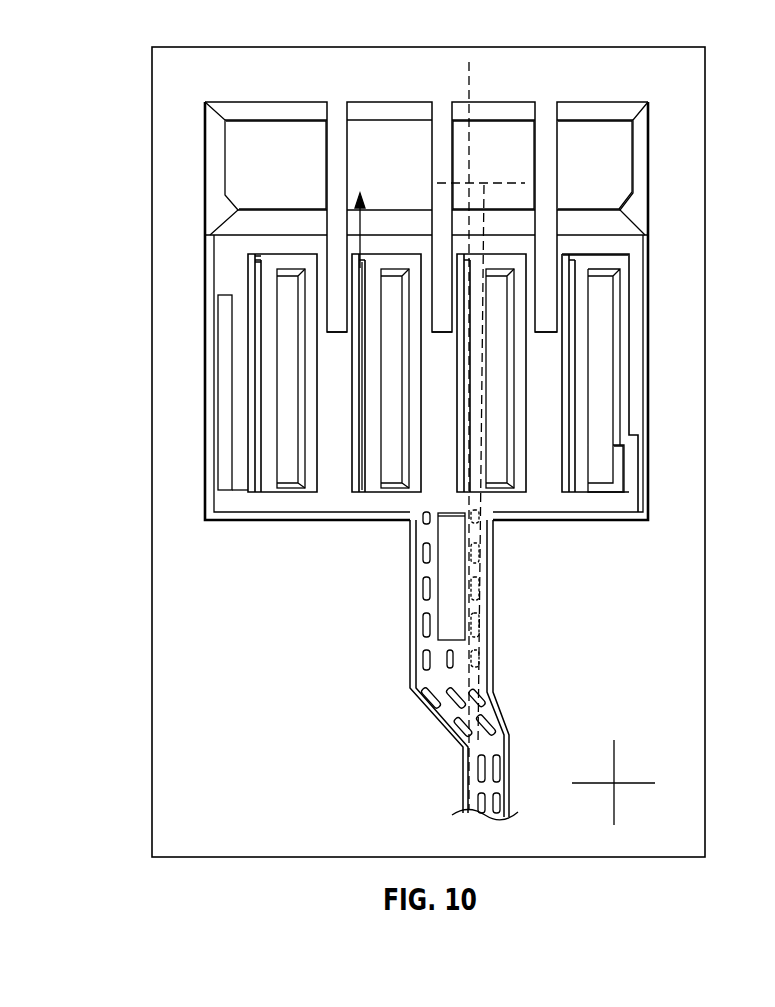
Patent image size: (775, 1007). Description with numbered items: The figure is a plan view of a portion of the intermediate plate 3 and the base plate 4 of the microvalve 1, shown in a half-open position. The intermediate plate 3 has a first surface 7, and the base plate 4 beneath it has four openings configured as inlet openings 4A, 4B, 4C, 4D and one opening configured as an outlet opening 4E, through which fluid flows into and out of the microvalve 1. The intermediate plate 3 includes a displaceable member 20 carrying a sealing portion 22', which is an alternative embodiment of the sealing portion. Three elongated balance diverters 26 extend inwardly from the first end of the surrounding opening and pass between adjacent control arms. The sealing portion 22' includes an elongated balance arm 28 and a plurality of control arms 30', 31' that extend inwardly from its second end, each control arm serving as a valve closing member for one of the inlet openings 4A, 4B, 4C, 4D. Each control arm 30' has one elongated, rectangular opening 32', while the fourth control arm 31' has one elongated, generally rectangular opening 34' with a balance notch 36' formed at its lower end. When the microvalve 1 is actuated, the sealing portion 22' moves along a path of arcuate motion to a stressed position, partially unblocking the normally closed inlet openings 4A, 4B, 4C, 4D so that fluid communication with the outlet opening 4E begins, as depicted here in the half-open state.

The microvalve 1 is at (166, 22).
The intermediate plate 3 is at (649, 47).
The base plate 4 is at (215, 148).
The inlet opening 4A is at (572, 258).
The inlet opening 4B is at (467, 258).
The inlet opening 4C is at (365, 440).
The inlet opening 4D is at (255, 258).
The outlet opening 4E is at (272, 145).
The first surface 7 is at (616, 82).
The displaceable member 20 is at (503, 627).
The sealing portion 22' is at (667, 348).
The balance diverters 26 is at (335, 120).
The balance arm 28 is at (228, 326).
The control arms 30' is at (389, 315).
The control arm 31' is at (667, 223).
The opening 32' is at (410, 431).
The opening 34' is at (670, 403).
The balance notch 36' is at (683, 492).